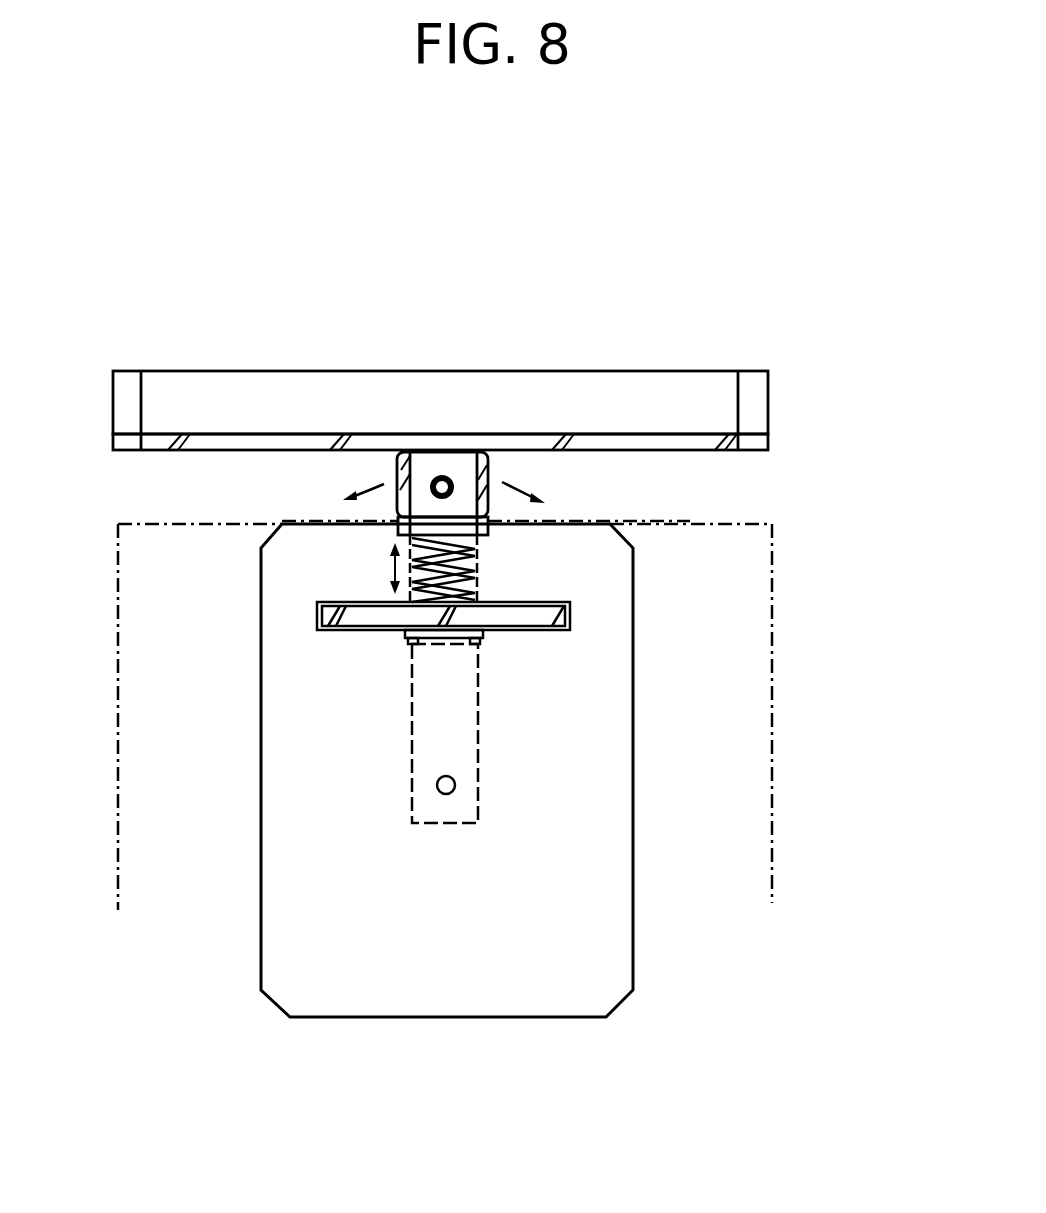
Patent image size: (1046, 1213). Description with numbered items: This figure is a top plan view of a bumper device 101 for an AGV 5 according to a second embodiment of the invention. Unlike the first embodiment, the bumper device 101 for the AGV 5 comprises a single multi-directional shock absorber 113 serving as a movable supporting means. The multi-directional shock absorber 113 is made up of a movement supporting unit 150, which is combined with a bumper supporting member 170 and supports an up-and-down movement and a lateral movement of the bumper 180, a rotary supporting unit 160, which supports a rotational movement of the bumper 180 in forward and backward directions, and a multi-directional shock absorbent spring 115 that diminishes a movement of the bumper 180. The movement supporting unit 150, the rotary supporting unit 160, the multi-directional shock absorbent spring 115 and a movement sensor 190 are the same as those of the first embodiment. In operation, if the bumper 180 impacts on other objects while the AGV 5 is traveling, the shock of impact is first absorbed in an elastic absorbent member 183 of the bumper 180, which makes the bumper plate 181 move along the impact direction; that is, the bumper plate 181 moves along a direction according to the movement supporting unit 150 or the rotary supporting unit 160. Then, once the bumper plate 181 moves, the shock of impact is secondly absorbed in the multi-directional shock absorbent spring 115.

The AGV 5 is at (116, 632).
The bumper device 101 is at (697, 302).
The bumper 180 is at (523, 420).
The elastic absorbent member 183 is at (770, 379).
The bumper plate 181 is at (770, 446).
The rotary supporting unit 160 is at (497, 475).
The multi-directional shock absorber 113 is at (772, 521).
The movement supporting unit 150 is at (477, 561).
The multi-directional shock absorbent spring 115 is at (470, 592).
The movement sensor 190 is at (478, 690).
The bumper supporting member 170 is at (636, 768).